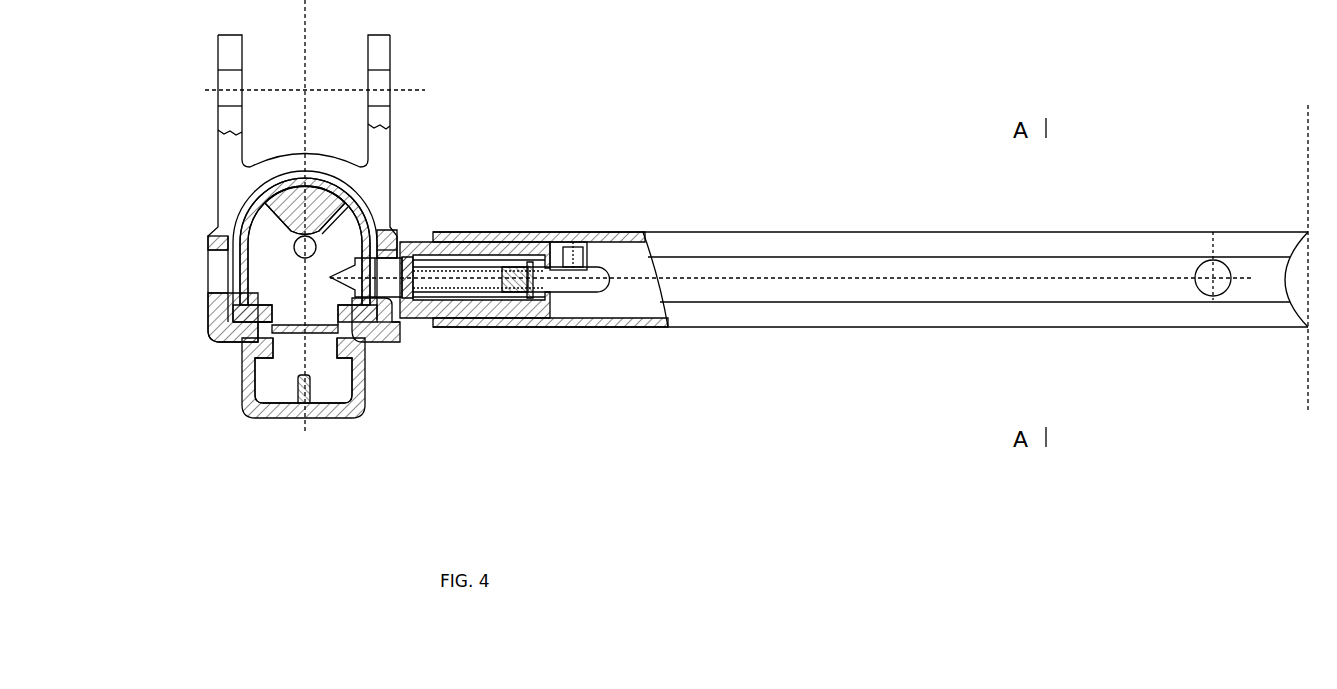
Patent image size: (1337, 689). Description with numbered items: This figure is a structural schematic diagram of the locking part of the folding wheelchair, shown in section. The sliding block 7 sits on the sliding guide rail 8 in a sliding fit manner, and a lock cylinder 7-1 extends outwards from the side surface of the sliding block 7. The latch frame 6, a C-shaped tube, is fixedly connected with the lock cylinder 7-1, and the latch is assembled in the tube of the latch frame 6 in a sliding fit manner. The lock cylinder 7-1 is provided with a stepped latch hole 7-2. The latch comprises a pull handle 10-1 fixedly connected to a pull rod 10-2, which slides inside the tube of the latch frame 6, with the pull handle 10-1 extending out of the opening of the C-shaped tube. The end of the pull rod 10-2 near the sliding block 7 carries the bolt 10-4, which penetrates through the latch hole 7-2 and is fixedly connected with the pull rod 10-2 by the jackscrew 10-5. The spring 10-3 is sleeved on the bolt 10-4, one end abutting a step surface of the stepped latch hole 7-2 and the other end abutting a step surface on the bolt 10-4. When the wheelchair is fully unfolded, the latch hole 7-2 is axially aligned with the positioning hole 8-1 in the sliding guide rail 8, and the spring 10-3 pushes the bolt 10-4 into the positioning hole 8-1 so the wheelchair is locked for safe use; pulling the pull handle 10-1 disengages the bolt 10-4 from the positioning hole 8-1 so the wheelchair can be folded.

The latch frame 6 is at (878, 247).
The sliding block 7 is at (232, 163).
The lock cylinder 7-1 is at (484, 252).
The stepped latch hole 7-2 is at (399, 243).
The sliding guide rail 8 is at (243, 389).
The positioning hole 8-1 is at (380, 333).
The pull handle 10-1 is at (1205, 273).
The pull rod 10-2 is at (627, 250).
The spring 10-3 is at (530, 300).
The bolt 10-4 is at (385, 290).
The jackscrew 10-5 is at (588, 242).